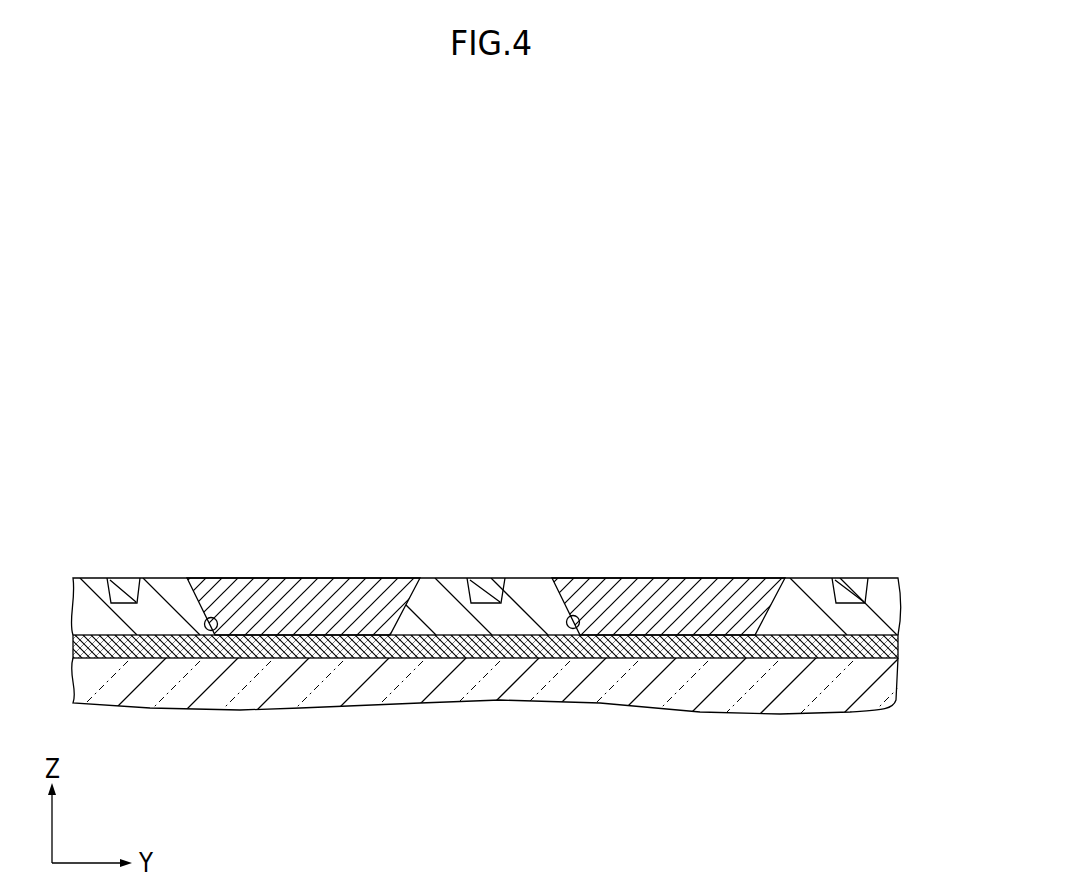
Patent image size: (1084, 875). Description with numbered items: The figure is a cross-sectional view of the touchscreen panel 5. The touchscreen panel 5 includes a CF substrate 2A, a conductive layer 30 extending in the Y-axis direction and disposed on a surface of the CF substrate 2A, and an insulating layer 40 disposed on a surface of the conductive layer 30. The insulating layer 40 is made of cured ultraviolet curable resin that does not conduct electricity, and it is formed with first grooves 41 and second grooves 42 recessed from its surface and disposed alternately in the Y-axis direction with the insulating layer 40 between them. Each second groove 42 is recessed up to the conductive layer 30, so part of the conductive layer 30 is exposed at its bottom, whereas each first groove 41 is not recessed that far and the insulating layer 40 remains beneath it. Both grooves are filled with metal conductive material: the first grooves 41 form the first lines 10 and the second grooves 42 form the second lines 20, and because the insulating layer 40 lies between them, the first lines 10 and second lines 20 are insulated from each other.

The touchscreen panel 5 is at (668, 275).
The CF substrate 2A is at (888, 682).
The first lines 10 is at (122, 578).
The second lines 20 is at (288, 585).
The conductive layer 30 is at (898, 648).
The insulating layer 40 is at (885, 607).
The first grooves 41 is at (123, 593).
The second grooves 42 is at (216, 627).